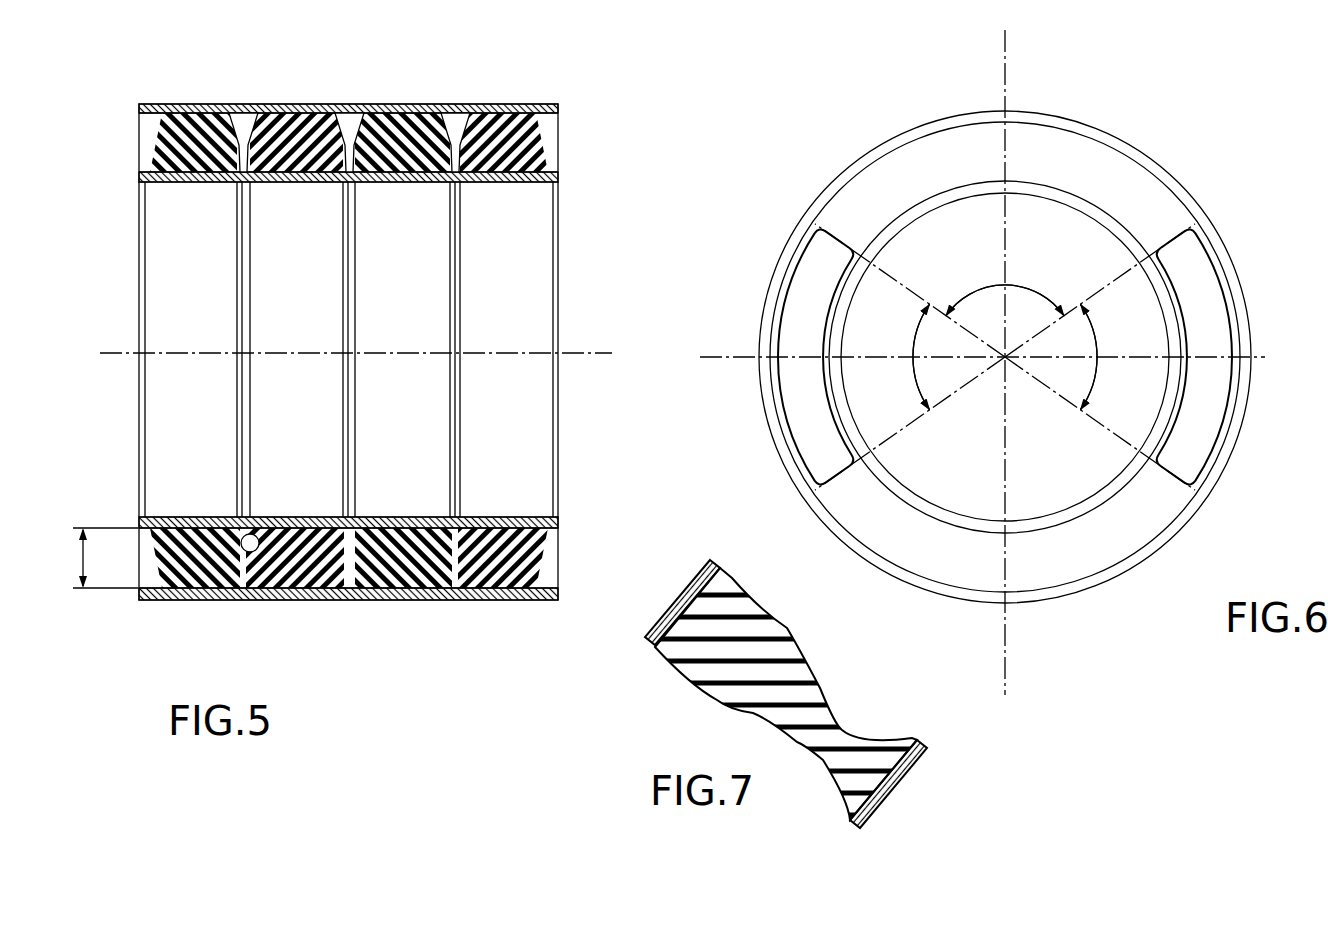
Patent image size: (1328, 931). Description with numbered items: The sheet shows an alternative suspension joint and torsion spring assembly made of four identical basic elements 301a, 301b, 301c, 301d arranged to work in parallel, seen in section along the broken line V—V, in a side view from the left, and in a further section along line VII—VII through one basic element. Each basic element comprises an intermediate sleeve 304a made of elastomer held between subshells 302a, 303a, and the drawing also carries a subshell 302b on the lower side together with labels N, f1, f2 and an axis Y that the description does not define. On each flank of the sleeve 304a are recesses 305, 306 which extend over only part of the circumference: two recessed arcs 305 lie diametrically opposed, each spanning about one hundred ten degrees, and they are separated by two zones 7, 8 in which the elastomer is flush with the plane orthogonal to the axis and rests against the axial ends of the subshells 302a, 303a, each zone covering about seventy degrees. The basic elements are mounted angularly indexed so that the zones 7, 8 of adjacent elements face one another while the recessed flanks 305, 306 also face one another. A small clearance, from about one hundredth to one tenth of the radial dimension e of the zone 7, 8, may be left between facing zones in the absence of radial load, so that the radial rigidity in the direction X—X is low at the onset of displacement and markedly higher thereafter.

In FIG. 5, the basic element 301a is at (168, 317).
In FIG. 5, the basic element 301b is at (313, 300).
In FIG. 5, the basic element 301c is at (421, 415).
In FIG. 5, the basic element 301d is at (528, 245).
In FIG. 5, the subshell 302a is at (203, 104).
In FIG. 7, the subshell 302a is at (690, 578).
In FIG. 5, the lower strip 302b is at (300, 600).
In FIG. 5, the subshell 303a is at (217, 183).
In FIG. 5, the intermediate sleeve 304a is at (232, 112).
In FIG. 5, the recess 305 is at (150, 133).
In FIG. 6, the recess 305 is at (1085, 150).
In FIG. 5, the recess 306 is at (245, 112).
In FIG. 5, the nozzle N is at (264, 124).
In FIG. 6, the zone 7 is at (806, 278).
In FIG. 7, the zone 7 is at (752, 592).
In FIG. 5, the zone 8 is at (140, 545).
In FIG. 6, the zone 8 is at (1200, 272).
In FIG. 5, the flow f1 is at (150, 155).
In FIG. 5, the flow f2 is at (248, 183).
In FIG. 5, the radial dimension e is at (105, 558).
In FIG. 6, the section line V— V is at (1010, 47).
In FIG. 6, the section line VII— VII is at (760, 413).
In FIG. 6, the direction X— X is at (700, 358).
In FIG. 6, the axis Y is at (1003, 86).